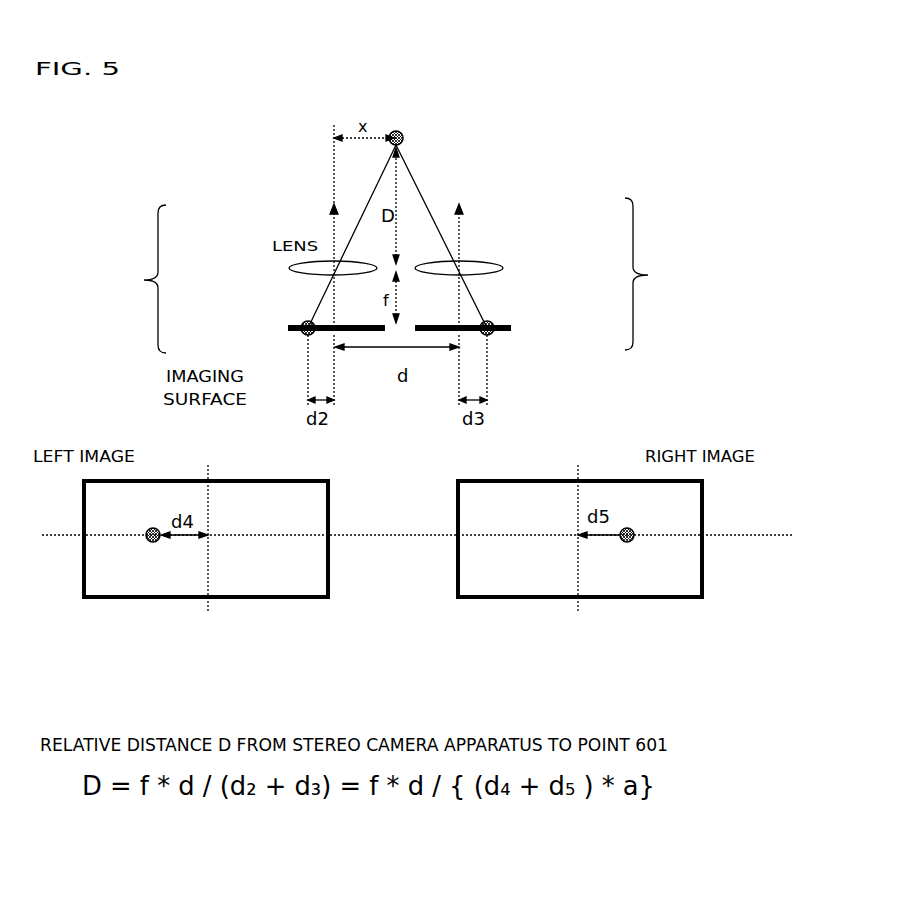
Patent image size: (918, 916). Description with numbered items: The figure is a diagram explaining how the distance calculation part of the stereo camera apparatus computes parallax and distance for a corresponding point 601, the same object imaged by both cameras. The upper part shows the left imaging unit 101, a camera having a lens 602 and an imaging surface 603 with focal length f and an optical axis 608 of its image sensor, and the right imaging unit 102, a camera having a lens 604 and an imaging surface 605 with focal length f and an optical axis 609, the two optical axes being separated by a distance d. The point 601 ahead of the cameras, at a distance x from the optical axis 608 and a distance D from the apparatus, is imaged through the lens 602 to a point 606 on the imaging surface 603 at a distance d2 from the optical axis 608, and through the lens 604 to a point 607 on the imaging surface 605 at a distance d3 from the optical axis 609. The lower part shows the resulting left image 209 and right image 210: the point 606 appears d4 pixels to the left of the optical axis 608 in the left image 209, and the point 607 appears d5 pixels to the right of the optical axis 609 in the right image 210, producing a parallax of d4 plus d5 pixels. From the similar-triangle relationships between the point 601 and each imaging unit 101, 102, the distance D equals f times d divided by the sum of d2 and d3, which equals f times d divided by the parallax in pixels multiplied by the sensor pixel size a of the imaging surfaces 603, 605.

The left imaging unit 101 is at (98, 279).
The right imaging unit 102 is at (716, 274).
The left image 209 is at (276, 599).
The right image 210 is at (693, 599).
The corresponding point 601 is at (404, 134).
The lens 602 is at (303, 275).
The imaging surface 603 is at (287, 329).
The lens 604 is at (502, 266).
The imaging surface 605 is at (512, 328).
The point 606 is at (312, 335).
The point 607 is at (490, 335).
The optical axis 608 is at (332, 212).
The optical axis 609 is at (466, 232).